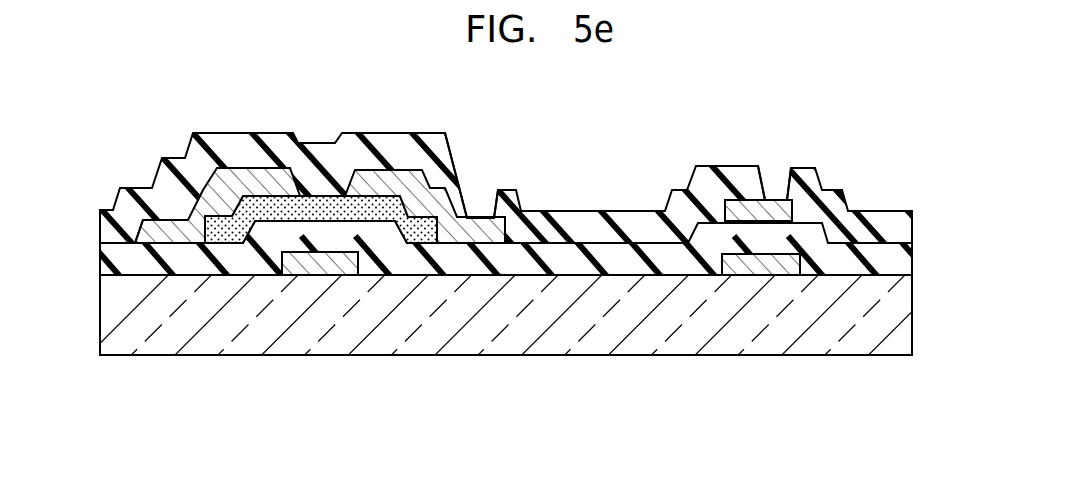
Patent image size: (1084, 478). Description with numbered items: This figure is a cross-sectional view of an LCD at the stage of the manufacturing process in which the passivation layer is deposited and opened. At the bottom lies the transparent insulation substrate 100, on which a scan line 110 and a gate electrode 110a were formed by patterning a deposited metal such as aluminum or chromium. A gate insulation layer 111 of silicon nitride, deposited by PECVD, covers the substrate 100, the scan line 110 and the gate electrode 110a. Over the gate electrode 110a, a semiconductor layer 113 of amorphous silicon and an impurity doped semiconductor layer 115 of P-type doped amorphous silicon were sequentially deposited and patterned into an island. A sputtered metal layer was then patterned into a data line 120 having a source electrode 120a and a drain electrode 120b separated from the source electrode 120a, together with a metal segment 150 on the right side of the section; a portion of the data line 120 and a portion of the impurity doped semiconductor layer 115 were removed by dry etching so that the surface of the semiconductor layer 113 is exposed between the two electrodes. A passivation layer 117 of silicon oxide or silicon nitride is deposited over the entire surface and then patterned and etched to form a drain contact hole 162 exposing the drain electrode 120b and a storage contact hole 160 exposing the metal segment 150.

The transparent insulation substrate 100 is at (830, 345).
The scan line 110 is at (753, 265).
The gate electrode 110a is at (322, 262).
The gate insulation layer 111 is at (628, 263).
The semiconductor layer 113 is at (400, 200).
The impurity doped semiconductor layer 115 is at (288, 195).
The passivation layer 117 is at (863, 227).
The data line 120 is at (121, 189).
The source electrode 120a is at (243, 183).
The drain electrode 120b is at (400, 188).
The metal segment 150 is at (693, 165).
The storage contact hole 160 is at (773, 178).
The drain contact hole 162 is at (478, 200).